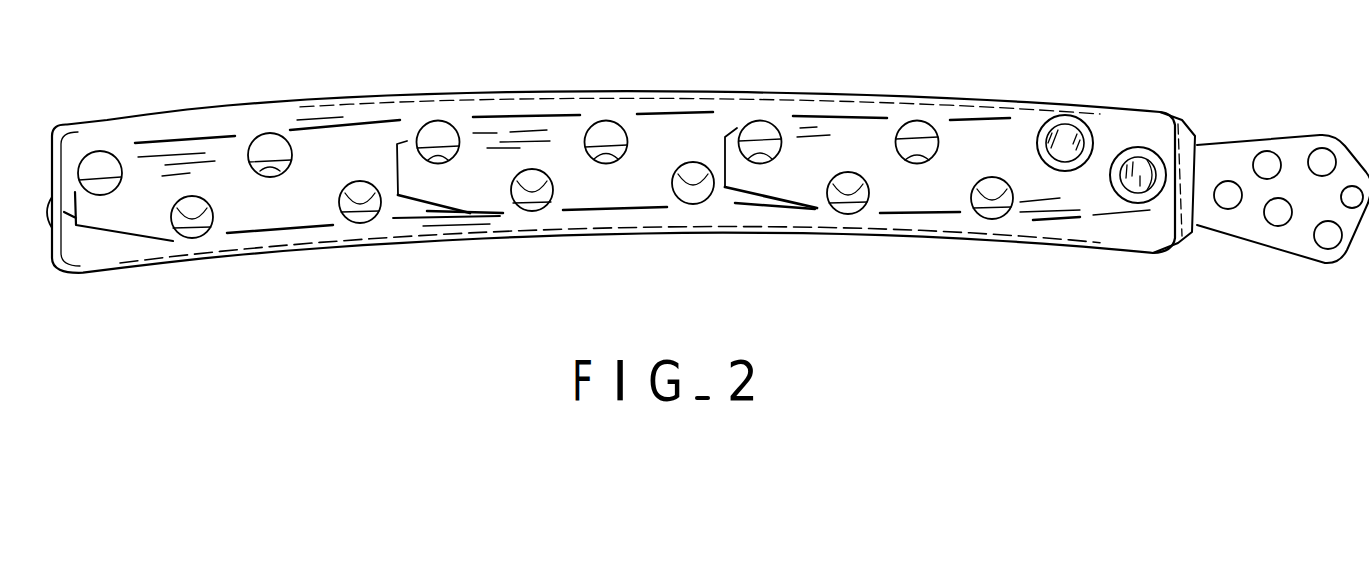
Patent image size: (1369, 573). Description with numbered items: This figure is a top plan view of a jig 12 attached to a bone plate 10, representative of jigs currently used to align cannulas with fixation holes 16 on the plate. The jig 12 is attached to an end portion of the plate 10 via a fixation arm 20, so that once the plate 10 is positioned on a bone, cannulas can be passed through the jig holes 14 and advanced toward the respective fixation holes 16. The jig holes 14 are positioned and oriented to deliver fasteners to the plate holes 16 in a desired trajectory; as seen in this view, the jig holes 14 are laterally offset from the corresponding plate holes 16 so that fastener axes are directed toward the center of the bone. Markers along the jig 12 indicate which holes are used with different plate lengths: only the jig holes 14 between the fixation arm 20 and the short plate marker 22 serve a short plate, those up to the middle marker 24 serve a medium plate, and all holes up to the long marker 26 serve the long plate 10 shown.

The bone plate 10 is at (1268, 237).
The jig 12 is at (955, 102).
The jig holes 14 is at (98, 160).
The fixation holes 16 is at (358, 185).
The fixation arm 20 is at (1195, 135).
The short plate marker 22 is at (723, 150).
The middle marker 24 is at (390, 162).
The long marker 26 is at (56, 215).